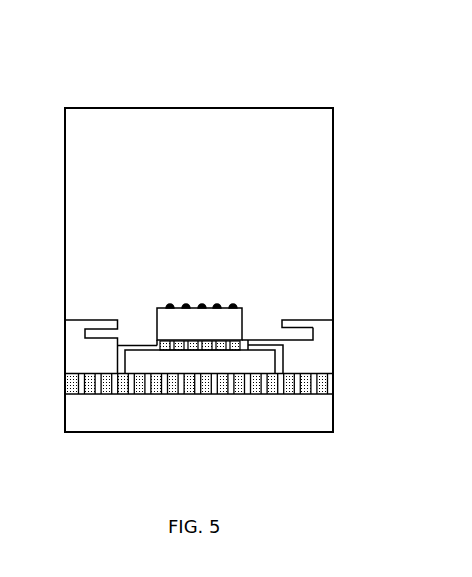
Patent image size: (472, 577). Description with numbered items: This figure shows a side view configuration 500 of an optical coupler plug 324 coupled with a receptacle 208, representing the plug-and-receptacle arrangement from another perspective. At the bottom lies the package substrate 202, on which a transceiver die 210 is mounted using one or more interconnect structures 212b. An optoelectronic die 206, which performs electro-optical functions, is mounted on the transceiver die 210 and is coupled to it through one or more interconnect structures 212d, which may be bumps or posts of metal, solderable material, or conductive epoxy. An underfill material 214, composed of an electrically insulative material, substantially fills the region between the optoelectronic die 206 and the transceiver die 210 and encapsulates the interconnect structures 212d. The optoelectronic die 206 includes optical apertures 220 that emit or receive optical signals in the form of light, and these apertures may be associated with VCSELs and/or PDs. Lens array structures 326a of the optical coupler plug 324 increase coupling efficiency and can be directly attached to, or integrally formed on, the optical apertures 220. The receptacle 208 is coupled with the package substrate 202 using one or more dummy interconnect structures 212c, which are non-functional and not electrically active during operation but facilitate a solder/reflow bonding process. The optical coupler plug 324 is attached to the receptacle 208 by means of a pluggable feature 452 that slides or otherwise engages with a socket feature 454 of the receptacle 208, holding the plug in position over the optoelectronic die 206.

The side view configuration 500 is at (227, 65).
The package substrate 202 is at (150, 433).
The optical coupler plug 324 is at (211, 208).
The receptacle 208 is at (227, 325).
The transceiver die 210 is at (218, 370).
The optoelectronic die 206 is at (206, 334).
The optical apertures 220 is at (170, 303).
The lens array structures 326a is at (233, 302).
The interconnect structures 212d is at (155, 343).
The underfill material 214 is at (183, 386).
The dummy interconnect structures 212c is at (119, 395).
The interconnect structures 212b is at (275, 395).
The pluggable feature 452 is at (297, 333).
The socket feature 454 is at (318, 327).